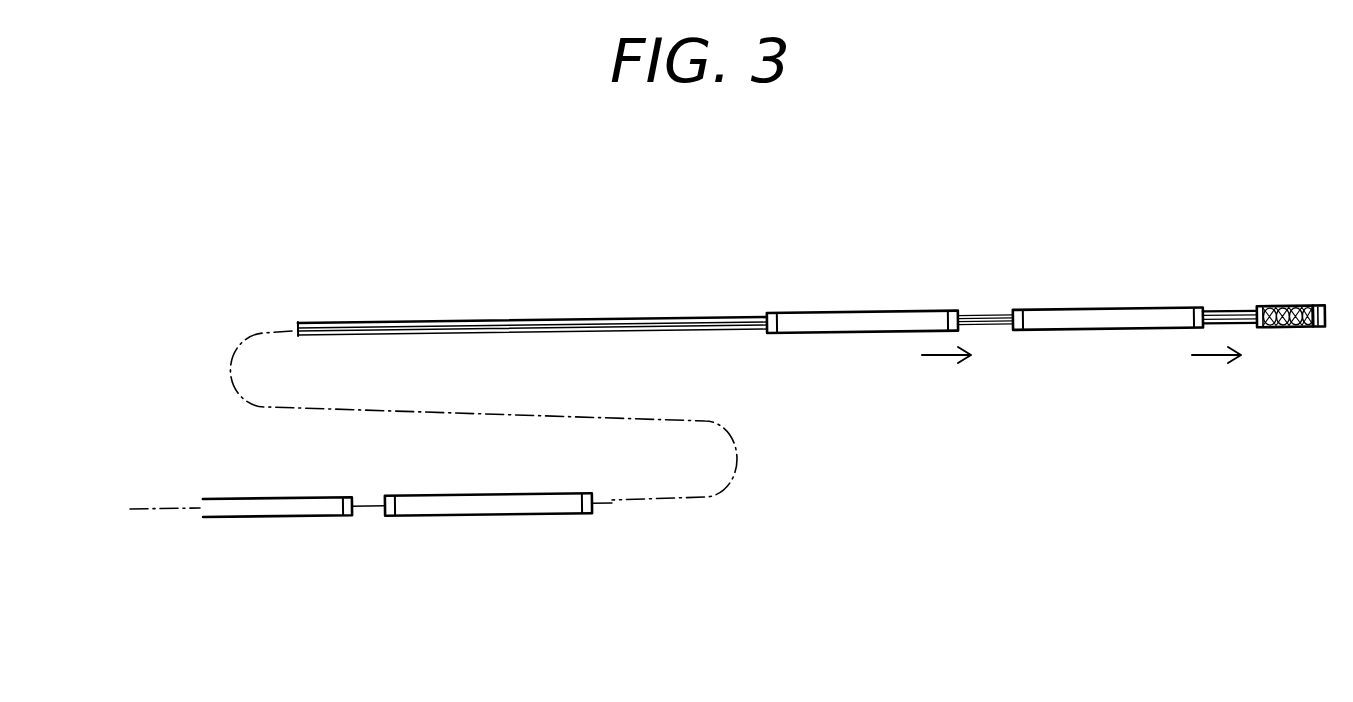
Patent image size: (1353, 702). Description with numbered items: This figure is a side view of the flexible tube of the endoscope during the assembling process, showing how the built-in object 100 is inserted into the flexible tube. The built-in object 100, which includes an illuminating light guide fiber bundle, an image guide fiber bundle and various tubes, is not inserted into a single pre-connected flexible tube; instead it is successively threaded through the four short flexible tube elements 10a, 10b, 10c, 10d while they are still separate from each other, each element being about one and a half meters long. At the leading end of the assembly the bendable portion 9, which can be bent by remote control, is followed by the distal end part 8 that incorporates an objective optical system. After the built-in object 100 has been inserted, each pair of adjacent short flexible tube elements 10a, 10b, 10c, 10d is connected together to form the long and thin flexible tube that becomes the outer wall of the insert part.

The built-in object 100 is at (660, 318).
The short flexible tube element 10a is at (1103, 318).
The short flexible tube element 10b is at (870, 318).
The short flexible tube element 10c is at (500, 506).
The short flexible tube element 10d is at (283, 518).
The bendable portion 9 is at (1277, 306).
The distal end part 8 is at (1323, 306).